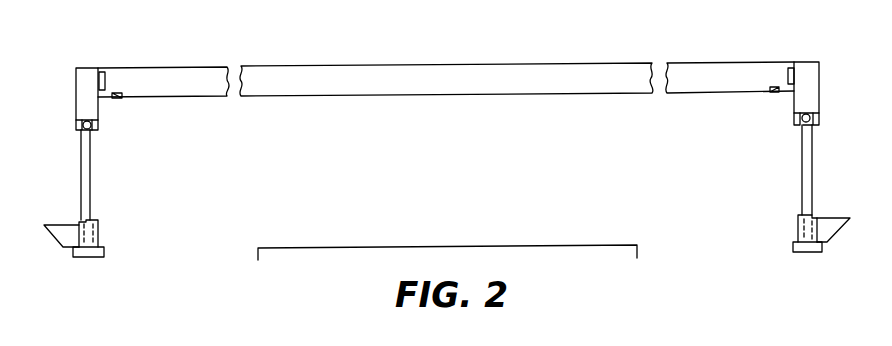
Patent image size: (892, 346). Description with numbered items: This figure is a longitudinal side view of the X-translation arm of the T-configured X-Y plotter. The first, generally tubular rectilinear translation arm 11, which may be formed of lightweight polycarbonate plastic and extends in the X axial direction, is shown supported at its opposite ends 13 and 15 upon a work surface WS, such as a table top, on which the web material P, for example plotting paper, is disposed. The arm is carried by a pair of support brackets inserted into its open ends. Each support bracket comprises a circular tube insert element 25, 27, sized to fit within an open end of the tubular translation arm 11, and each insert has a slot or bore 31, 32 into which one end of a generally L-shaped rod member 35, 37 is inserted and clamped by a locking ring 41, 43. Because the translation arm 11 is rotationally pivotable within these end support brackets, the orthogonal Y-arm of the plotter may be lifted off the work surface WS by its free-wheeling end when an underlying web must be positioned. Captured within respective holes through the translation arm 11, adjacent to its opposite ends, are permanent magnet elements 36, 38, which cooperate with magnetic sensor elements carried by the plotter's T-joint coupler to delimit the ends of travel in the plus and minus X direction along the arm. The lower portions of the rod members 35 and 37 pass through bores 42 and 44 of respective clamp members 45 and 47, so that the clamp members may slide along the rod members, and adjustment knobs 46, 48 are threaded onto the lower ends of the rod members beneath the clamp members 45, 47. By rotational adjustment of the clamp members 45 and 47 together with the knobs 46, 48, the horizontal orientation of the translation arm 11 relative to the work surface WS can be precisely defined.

The translation arm 11 is at (592, 62).
The end 13 is at (102, 71).
The end 15 is at (791, 67).
The circular tube insert element 25 is at (76, 68).
The circular tube insert element 27 is at (820, 70).
The slot or bore 31 is at (98, 127).
The slot or bore 32 is at (793, 125).
The L-shaped rod member 35 is at (91, 177).
The permanent magnet element 36 is at (119, 99).
The L-shaped rod member 37 is at (812, 148).
The permanent magnet element 38 is at (773, 93).
The locking ring 41 is at (77, 125).
The bore 42 is at (96, 220).
The locking ring 43 is at (820, 118).
The bore 44 is at (801, 216).
The clamp member 45 is at (52, 225).
The adjustment knob 46 is at (105, 252).
The clamp member 47 is at (840, 218).
The adjustment knob 48 is at (822, 250).
The work surface WS is at (206, 258).
The web material P is at (607, 245).